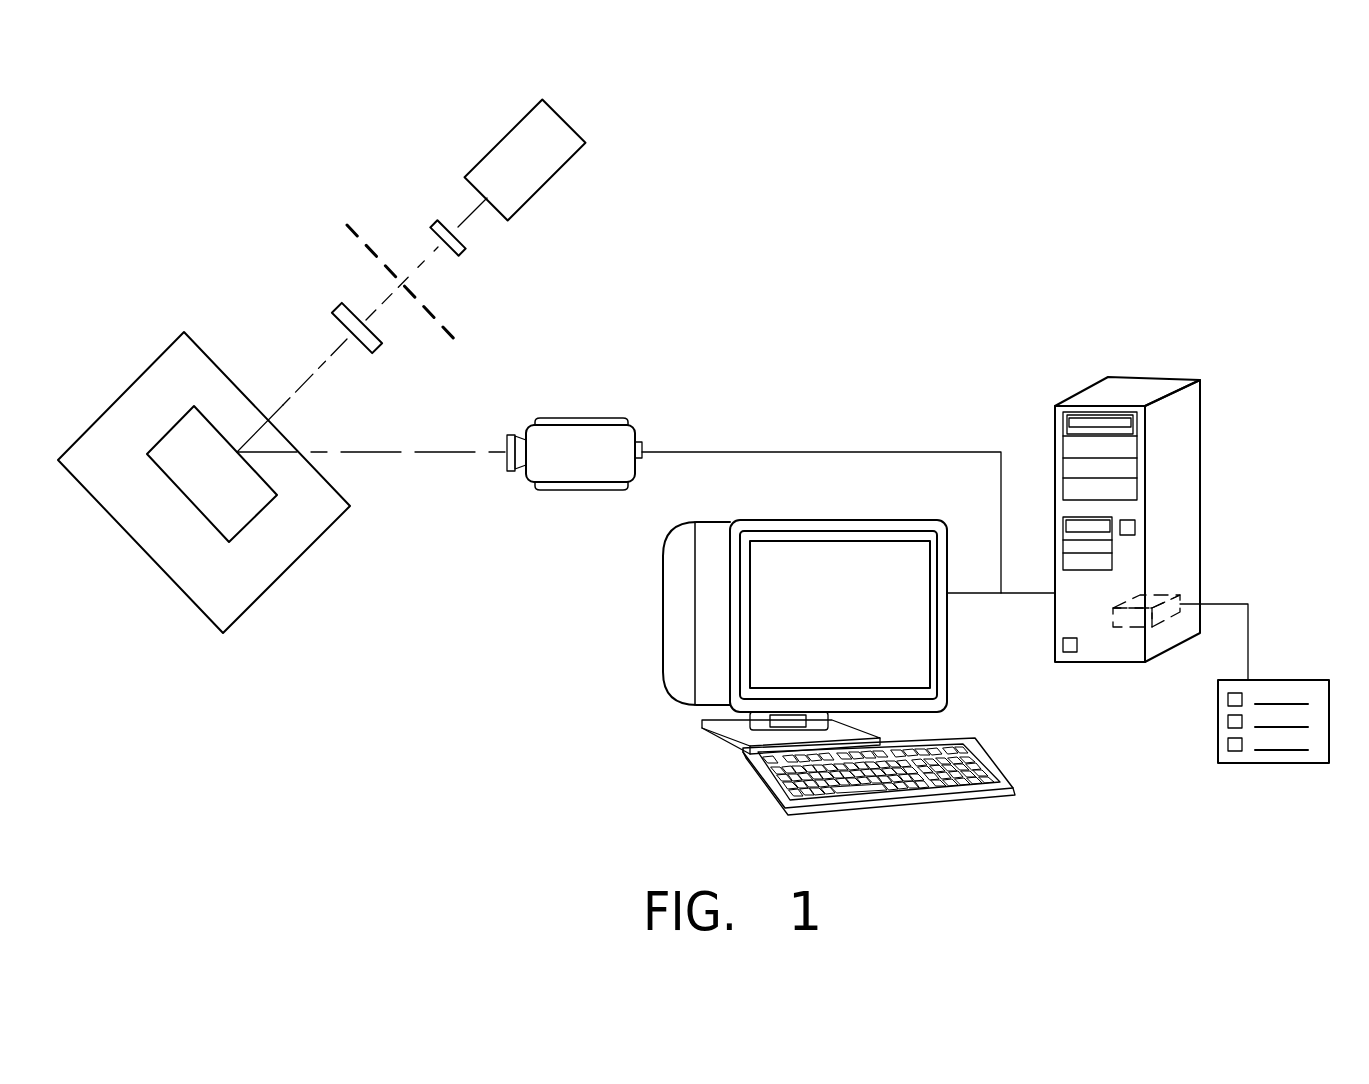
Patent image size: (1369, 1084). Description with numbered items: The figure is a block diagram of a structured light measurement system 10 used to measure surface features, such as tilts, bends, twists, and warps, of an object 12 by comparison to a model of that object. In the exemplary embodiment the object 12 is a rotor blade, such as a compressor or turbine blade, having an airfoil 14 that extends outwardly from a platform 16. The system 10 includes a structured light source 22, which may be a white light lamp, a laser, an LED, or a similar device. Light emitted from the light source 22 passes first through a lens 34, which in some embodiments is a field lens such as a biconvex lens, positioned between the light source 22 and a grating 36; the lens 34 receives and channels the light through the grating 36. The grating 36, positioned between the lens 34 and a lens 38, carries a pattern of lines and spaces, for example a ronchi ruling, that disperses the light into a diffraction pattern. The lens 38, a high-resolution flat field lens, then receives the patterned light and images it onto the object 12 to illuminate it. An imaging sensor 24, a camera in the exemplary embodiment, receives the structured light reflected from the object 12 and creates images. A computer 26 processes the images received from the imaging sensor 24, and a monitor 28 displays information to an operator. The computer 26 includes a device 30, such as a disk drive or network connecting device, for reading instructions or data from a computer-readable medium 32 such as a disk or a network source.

The structured light measurement system 10 is at (797, 190).
The object 12 is at (162, 310).
The airfoil 14 is at (243, 502).
The platform 16 is at (240, 595).
The structured light source 22 is at (517, 123).
The imaging sensor 24 is at (580, 418).
The computer 26 is at (1082, 390).
The monitor 28 is at (661, 603).
The device 30 is at (1130, 627).
The computer-readable medium 32 is at (1290, 678).
The lens 34 is at (463, 250).
The grating 36 is at (358, 233).
The lens 38 is at (352, 300).